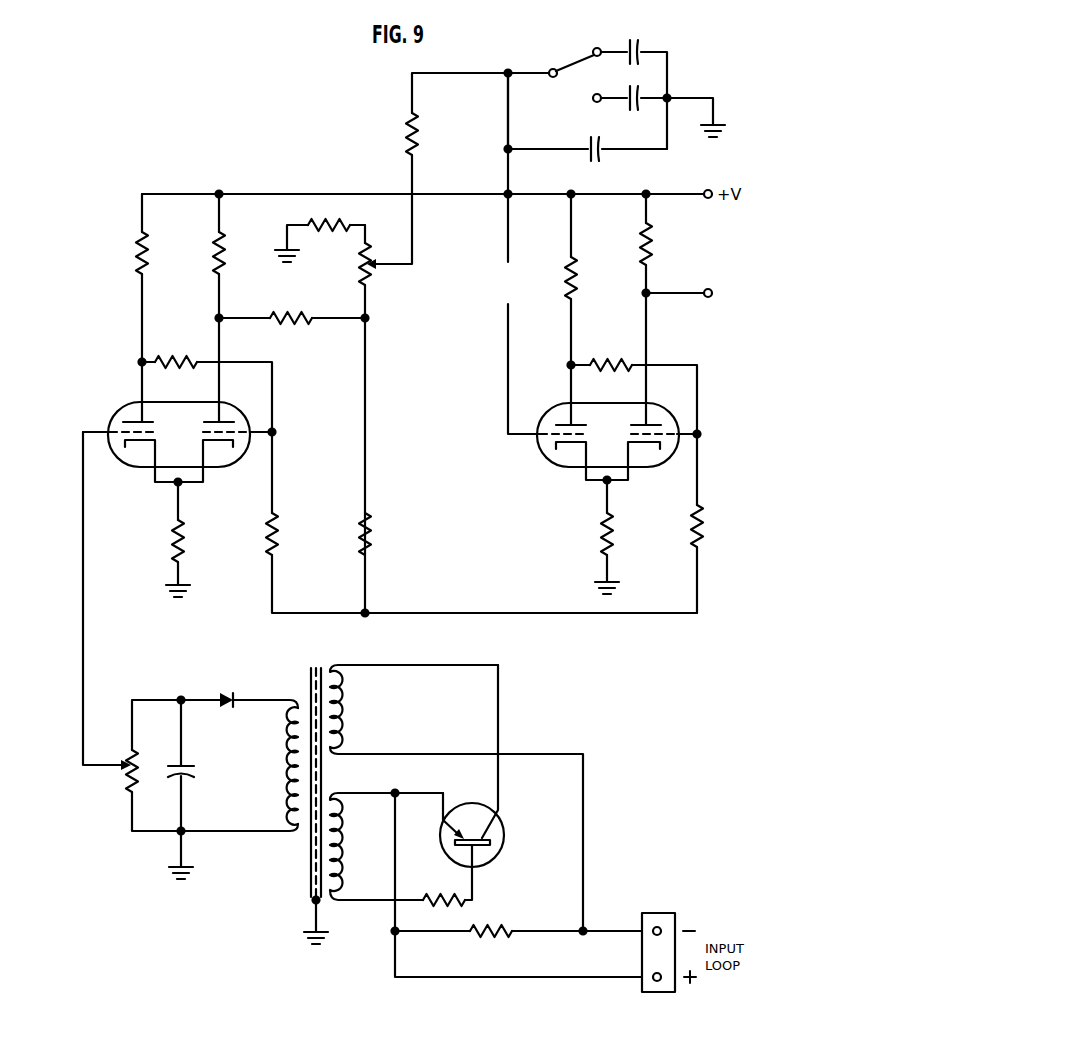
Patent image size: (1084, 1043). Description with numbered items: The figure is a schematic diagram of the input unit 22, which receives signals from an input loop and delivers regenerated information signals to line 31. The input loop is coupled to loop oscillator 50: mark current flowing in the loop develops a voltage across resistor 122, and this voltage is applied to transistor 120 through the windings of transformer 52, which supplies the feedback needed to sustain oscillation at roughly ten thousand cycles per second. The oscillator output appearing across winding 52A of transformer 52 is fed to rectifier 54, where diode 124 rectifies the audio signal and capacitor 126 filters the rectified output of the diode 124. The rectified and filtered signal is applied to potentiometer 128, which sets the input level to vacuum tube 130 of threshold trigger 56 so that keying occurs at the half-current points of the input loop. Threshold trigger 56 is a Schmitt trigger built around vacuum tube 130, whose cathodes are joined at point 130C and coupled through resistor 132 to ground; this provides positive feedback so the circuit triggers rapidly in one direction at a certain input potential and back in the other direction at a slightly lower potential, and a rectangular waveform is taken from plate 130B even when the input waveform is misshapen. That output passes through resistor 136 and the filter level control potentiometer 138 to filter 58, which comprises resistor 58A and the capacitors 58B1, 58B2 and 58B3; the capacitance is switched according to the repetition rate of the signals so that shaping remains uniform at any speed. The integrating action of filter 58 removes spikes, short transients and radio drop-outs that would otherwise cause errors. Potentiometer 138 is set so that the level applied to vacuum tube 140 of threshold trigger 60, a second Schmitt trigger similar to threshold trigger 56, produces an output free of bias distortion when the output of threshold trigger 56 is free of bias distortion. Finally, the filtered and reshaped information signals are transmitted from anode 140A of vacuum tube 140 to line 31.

The input unit 22 is at (262, 158).
The filter 58 is at (469, 151).
The resistor 58A is at (407, 142).
The capacitor 58B1 is at (642, 54).
The capacitor 58B2 is at (642, 97).
The capacitor 58B3 is at (602, 156).
The line 31 is at (665, 292).
The filter level control potentiometer 138 is at (362, 263).
The resistor 136 is at (300, 313).
The threshold trigger 56 is at (131, 497).
The vacuum tube 130 is at (120, 416).
The plate 130B is at (226, 420).
The cathode junction point 130C is at (182, 485).
The resistor 132 is at (172, 536).
The vacuum tube 140 is at (554, 418).
The anode 140A is at (632, 421).
The threshold trigger 60 is at (483, 564).
The rectifier 54 is at (241, 804).
The diode 124 is at (223, 694).
The capacitor 126 is at (186, 768).
The potentiometer 128 is at (128, 778).
The winding 52A is at (283, 803).
The transformer 52 is at (326, 661).
The loop oscillator 50 is at (428, 738).
The transistor 120 is at (505, 838).
The resistor 122 is at (501, 937).